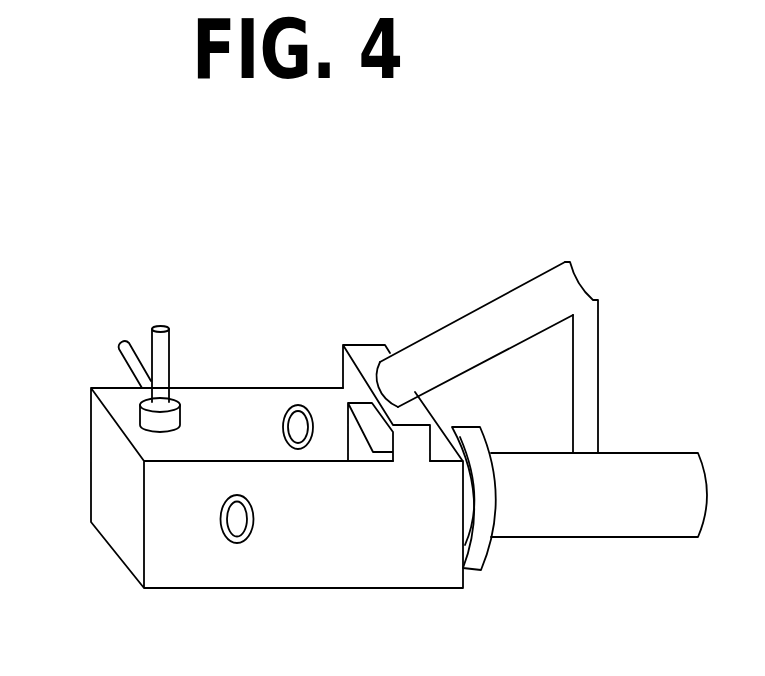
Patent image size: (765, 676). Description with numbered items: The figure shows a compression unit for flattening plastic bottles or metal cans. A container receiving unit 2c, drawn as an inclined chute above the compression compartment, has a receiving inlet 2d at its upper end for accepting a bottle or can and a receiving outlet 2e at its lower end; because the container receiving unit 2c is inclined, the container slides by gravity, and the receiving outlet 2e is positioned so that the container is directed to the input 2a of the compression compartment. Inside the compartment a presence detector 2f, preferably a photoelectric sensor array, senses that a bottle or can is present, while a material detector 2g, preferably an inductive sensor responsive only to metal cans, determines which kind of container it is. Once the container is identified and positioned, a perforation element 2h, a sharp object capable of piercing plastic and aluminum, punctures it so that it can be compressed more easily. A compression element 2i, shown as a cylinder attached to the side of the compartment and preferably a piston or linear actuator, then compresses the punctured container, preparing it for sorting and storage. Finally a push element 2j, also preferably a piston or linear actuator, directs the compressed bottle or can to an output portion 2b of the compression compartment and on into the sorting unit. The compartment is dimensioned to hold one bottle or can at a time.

The input 2a is at (337, 417).
The output portion 2b is at (162, 588).
The container receiving unit 2c is at (476, 334).
The receiving inlet 2d is at (565, 288).
The receiving outlet 2e is at (398, 385).
The presence detector 2f is at (298, 427).
The material detector 2g is at (237, 533).
The perforation element 2h is at (128, 358).
The compression element 2i is at (579, 498).
The push element 2j is at (160, 328).